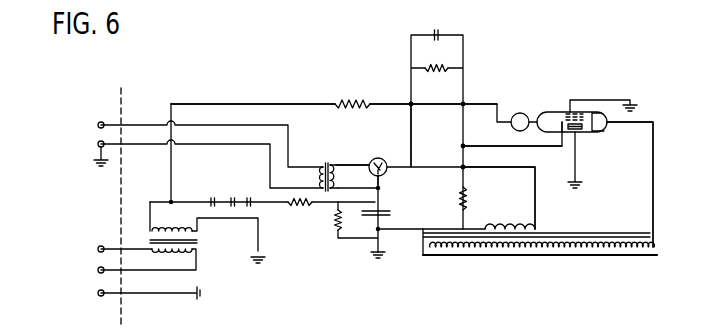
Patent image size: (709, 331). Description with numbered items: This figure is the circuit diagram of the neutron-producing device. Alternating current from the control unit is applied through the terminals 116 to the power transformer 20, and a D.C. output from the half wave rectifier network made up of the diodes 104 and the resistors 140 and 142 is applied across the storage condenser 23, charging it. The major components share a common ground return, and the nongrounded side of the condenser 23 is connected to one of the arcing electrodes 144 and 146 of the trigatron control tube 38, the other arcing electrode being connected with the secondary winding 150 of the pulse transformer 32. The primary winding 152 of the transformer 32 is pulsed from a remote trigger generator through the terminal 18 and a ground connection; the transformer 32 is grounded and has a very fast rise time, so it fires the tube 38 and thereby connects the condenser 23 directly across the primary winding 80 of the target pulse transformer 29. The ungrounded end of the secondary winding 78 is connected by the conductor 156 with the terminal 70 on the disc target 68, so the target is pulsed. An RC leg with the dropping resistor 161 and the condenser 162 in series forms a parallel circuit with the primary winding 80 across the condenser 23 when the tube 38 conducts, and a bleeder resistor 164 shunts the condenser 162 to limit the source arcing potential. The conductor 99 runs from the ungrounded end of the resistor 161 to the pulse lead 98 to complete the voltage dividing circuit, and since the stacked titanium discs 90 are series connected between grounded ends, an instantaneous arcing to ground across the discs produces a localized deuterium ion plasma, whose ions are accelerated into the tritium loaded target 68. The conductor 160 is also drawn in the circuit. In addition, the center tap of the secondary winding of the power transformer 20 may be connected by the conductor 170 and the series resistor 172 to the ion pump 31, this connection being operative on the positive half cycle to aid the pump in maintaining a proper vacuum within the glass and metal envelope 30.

The terminal 18 is at (97, 125).
The terminals 116 is at (98, 270).
The power transformer 20 is at (199, 241).
The diodes 104 is at (232, 198).
The conductor 170 is at (216, 104).
The series resistor 172 is at (340, 104).
The condenser 162 is at (438, 29).
The bleeder resistor 164 is at (440, 71).
The ion pump 31 is at (519, 112).
The glass and metal envelope 30 is at (570, 104).
The pulse lead 98 is at (567, 112).
The disc target 68 is at (596, 117).
The terminal 70 is at (600, 131).
The stacked titanium discs 90 is at (580, 132).
The conductor 99 is at (482, 146).
The conductor 156 is at (654, 206).
The conductor 160 is at (388, 159).
The trigatron control tube 38 is at (373, 159).
The arcing electrode 146 is at (358, 164).
The secondary winding 150 is at (334, 164).
The pulse transformer 32 is at (325, 165).
The primary winding 152 is at (315, 177).
The arcing electrode 144 is at (380, 178).
The storage condenser 23 is at (390, 213).
The resistor 140 is at (298, 217).
The resistor 142 is at (336, 227).
The dropping resistor 161 is at (475, 184).
The primary winding 80 is at (511, 224).
The target pulse transformer 29 is at (577, 234).
The secondary winding 78 is at (578, 256).